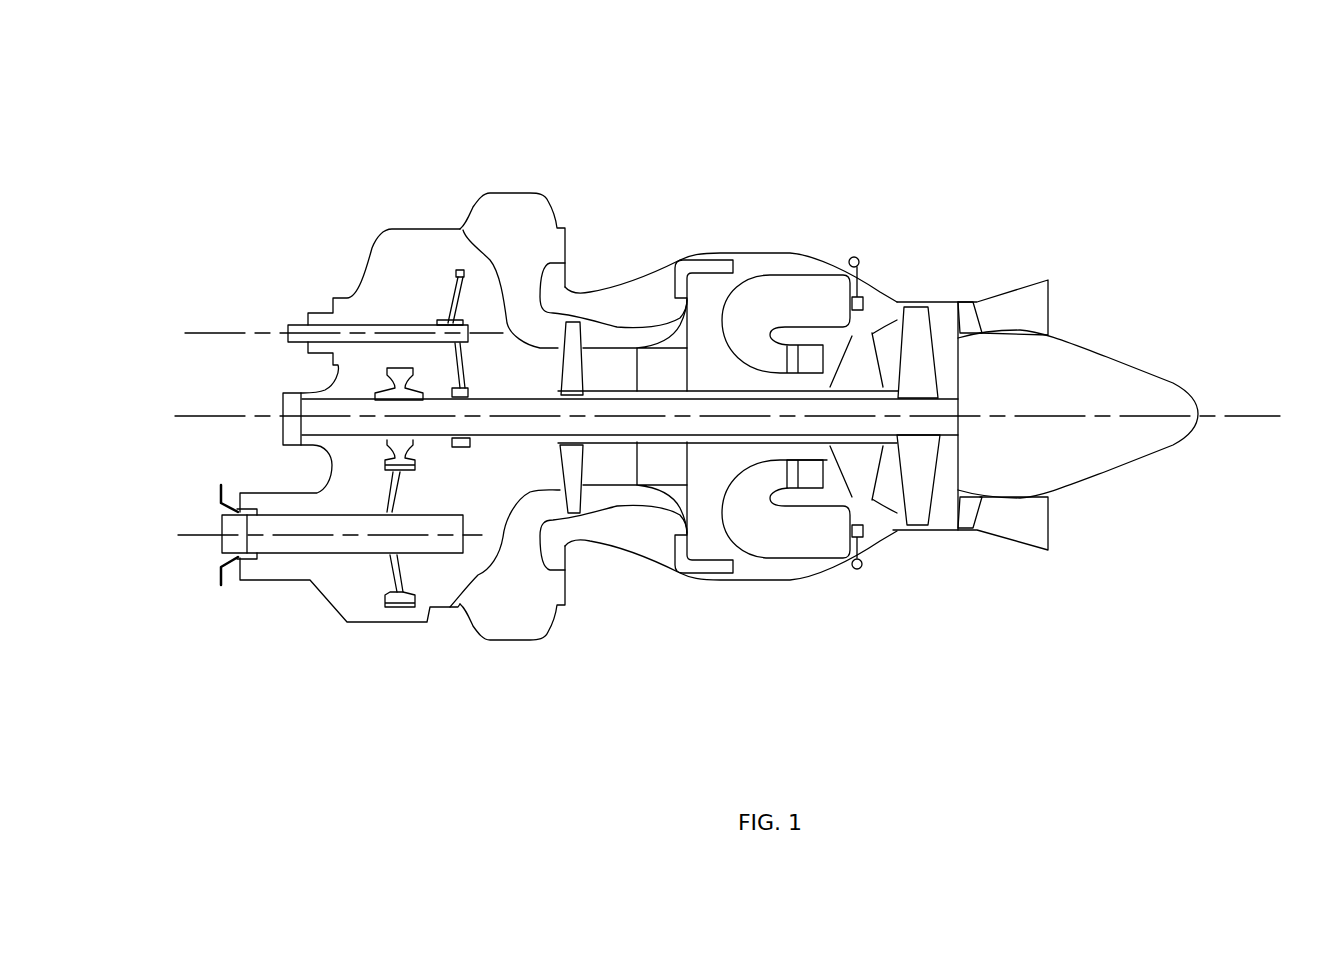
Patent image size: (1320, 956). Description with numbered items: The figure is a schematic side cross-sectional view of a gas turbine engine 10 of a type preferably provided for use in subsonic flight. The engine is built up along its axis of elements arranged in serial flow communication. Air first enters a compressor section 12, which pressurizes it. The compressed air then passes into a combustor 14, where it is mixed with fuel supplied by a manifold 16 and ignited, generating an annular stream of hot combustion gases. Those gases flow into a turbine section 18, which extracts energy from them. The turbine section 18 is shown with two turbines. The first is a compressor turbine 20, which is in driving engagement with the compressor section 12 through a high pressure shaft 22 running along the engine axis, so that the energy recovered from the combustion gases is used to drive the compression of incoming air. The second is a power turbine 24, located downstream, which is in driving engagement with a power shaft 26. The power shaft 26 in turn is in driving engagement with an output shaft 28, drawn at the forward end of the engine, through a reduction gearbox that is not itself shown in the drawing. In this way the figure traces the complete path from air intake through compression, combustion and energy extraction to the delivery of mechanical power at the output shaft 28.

The gas turbine engine 10 is at (727, 390).
The compressor section 12 is at (658, 353).
The combustor 14 is at (790, 300).
The manifold 16 is at (856, 257).
The turbine section 18 is at (884, 487).
The compressor turbine 20 is at (848, 463).
The high pressure shaft 22 is at (728, 387).
The power turbine 24 is at (917, 325).
The power shaft 26 is at (507, 435).
The output shaft 28 is at (278, 545).